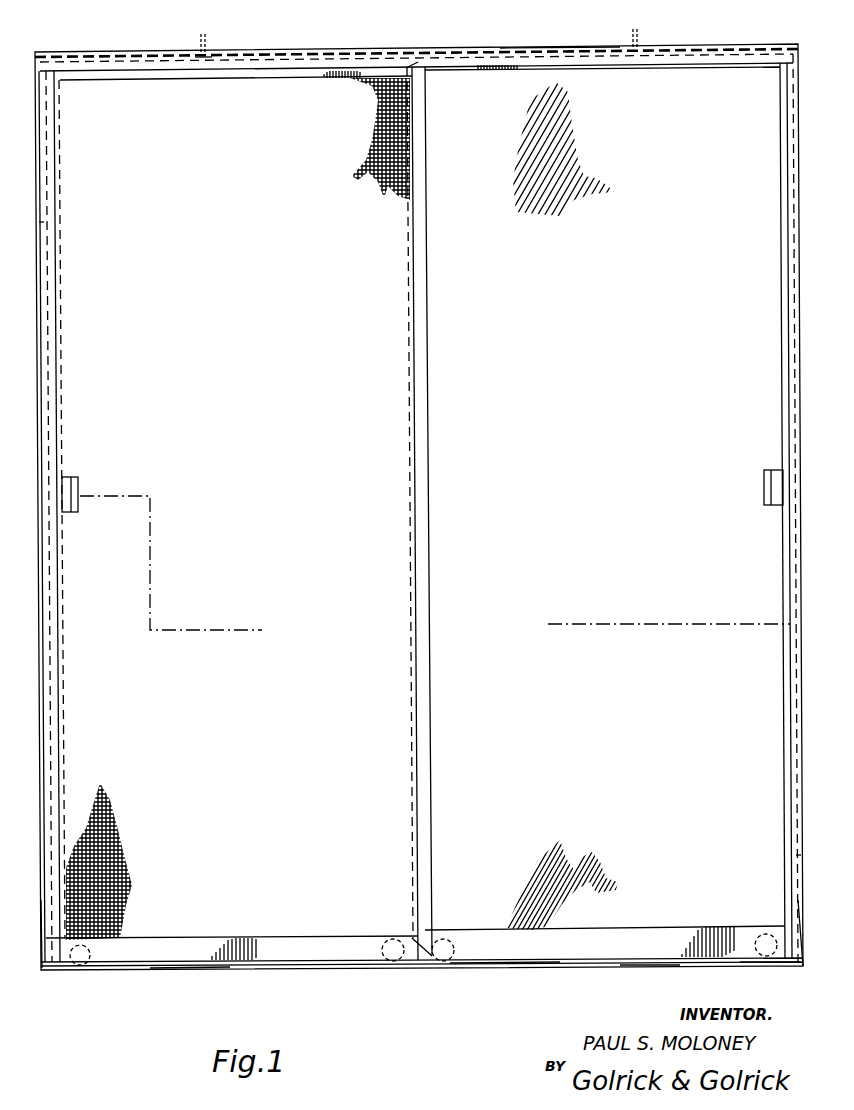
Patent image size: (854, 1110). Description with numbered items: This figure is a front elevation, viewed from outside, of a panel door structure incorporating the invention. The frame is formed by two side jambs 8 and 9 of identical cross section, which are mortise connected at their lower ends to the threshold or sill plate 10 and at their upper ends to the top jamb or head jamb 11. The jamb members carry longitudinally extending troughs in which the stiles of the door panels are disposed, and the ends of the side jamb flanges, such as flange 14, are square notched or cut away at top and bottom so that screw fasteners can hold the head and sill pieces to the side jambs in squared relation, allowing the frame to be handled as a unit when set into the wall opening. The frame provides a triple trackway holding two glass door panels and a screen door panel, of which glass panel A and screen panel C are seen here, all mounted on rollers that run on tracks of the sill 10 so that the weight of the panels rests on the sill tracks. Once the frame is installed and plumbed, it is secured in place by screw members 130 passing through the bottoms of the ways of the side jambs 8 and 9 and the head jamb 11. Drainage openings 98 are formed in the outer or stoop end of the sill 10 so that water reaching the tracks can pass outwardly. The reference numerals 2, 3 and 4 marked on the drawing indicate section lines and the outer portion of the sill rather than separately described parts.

The side jamb 8 is at (40, 930).
The side jamb 9 is at (802, 942).
The threshold or sill plate 10 is at (512, 972).
The top jamb or head jamb 11 is at (560, 44).
The screw members 130 is at (203, 62).
The openings 98 is at (190, 968).
The sill end portion 4 is at (772, 960).
The screen door panel C is at (130, 932).
The glass door panel A is at (607, 918).
The section line 2- 2 is at (388, 22).
The section line 3- 3 is at (56, 496).
The flange 14 is at (770, 492).